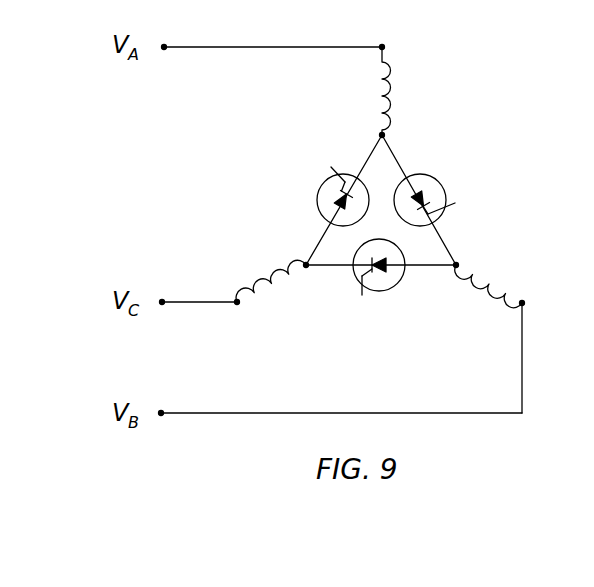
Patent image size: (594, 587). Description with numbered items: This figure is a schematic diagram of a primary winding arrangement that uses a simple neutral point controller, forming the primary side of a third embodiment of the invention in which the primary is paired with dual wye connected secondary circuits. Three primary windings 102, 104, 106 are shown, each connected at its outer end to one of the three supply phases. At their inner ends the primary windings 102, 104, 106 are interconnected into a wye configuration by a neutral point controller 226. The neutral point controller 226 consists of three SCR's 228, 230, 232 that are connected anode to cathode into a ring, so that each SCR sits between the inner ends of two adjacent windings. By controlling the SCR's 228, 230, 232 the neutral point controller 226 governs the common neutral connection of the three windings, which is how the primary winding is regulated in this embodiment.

The primary winding 102 is at (391, 86).
The primary winding 104 is at (282, 272).
The primary winding 106 is at (484, 295).
The neutral point controller 226 is at (480, 184).
The SCR 228 is at (318, 202).
The SCR 230 is at (432, 178).
The SCR 232 is at (366, 284).